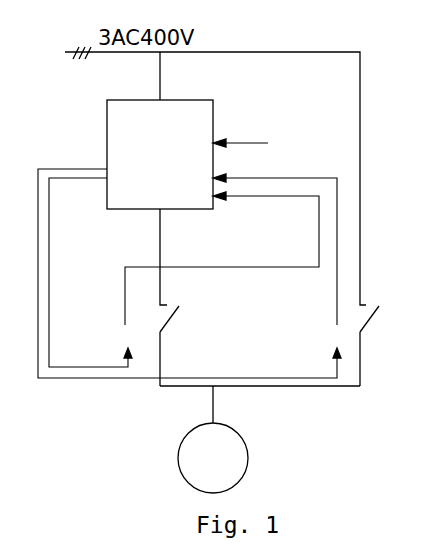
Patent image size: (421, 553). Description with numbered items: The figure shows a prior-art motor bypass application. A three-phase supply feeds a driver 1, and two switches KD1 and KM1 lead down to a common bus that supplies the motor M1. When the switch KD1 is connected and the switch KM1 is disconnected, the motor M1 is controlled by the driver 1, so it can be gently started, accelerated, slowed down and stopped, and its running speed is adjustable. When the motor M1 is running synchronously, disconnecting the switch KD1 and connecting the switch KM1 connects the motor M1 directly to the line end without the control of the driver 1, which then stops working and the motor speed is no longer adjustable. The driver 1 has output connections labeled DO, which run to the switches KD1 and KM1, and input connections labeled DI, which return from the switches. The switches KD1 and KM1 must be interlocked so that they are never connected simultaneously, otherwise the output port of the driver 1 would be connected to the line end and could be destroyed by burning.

The driver 1 is at (105, 112).
The switch KD1 is at (157, 329).
The switch KM1 is at (357, 329).
The motor M1 is at (213, 439).
The digital outputs DO is at (189, 255).
The digital inputs DI is at (231, 232).